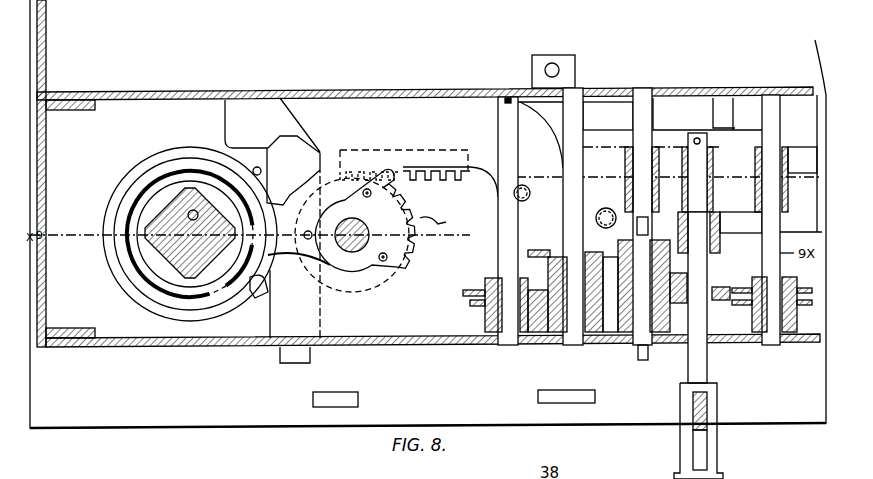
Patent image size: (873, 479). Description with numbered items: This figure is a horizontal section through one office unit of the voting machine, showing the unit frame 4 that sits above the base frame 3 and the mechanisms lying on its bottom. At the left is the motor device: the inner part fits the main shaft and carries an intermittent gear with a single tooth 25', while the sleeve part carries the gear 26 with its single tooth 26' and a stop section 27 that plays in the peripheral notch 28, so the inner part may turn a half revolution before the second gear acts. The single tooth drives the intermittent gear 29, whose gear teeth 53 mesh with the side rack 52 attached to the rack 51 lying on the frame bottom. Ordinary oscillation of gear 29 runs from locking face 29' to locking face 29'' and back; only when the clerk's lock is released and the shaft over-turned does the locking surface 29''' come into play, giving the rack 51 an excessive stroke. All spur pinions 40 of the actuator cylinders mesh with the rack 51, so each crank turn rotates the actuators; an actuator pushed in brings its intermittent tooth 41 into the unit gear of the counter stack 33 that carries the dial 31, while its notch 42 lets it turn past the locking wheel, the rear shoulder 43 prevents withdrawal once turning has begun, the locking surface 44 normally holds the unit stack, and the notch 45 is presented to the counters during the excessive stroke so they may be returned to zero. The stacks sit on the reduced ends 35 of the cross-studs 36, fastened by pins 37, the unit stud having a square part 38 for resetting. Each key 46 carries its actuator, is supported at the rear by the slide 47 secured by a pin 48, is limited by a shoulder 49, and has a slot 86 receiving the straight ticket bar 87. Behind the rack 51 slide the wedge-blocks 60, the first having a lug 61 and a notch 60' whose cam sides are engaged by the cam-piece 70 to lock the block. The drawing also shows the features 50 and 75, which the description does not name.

The base frame 3 is at (428, 214).
The unit frame 4 is at (168, 348).
The intermittent gear 26 is at (194, 332).
The single tooth 26' is at (290, 283).
The stop section 27 is at (192, 234).
The peripheral notch 28 is at (167, 182).
The intermittent gear 29 is at (355, 237).
The locking face 29' is at (404, 156).
The locking face 29'' is at (293, 176).
The locking surface 29''' is at (293, 229).
The single tooth 25' is at (246, 137).
The wedge-block 60 is at (516, 85).
The notch 60' is at (299, 131).
The cam-piece 70 is at (296, 330).
The side rack 52 is at (450, 187).
The gear teeth 53 is at (441, 221).
The cross-stud 36 is at (498, 152).
The pin 37 is at (508, 97).
The lug 61 is at (566, 62).
The dial 31 is at (490, 345).
The reduced end 35 is at (500, 276).
The stack 33 is at (485, 290).
The notch 45 is at (598, 345).
The locking surface 44 is at (641, 362).
The square part 38 is at (640, 222).
The slide 47 is at (713, 158).
The pin 48 is at (697, 137).
The key 46 is at (707, 367).
The shoulder 49 is at (722, 385).
The slot 86 is at (720, 443).
The straight ticket bar 87 is at (695, 408).
The spur pinion 40 is at (740, 222).
The rear shoulder 43 is at (720, 249).
The notch 42 is at (705, 275).
The intermittent tooth 41 is at (752, 283).
The rack 51 is at (799, 219).
The gear cluster 50 is at (765, 304).
The slot 75 is at (355, 398).